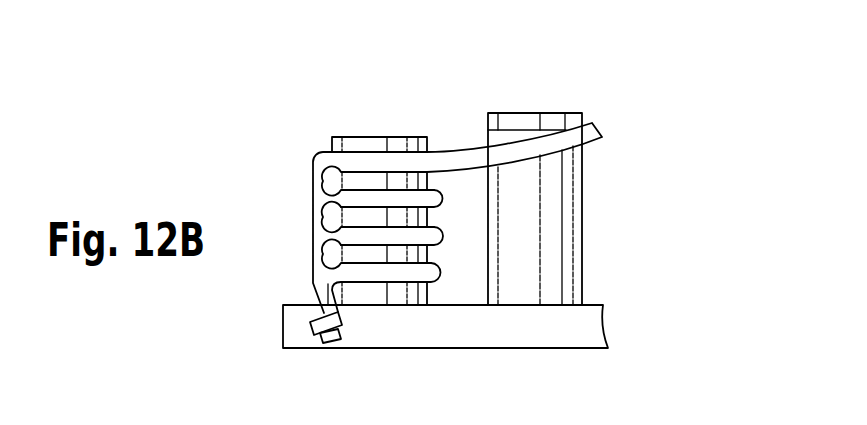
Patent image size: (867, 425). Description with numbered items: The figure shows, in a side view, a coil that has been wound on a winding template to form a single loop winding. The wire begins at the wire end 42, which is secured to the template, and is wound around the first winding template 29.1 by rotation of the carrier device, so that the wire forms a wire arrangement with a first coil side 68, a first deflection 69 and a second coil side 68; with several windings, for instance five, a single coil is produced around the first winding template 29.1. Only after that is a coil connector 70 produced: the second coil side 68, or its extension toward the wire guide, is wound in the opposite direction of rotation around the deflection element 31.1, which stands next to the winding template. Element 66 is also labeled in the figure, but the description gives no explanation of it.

The first winding template 29.1 is at (376, 127).
The deflection element 31.1 is at (533, 106).
The first coil connector 70 is at (530, 166).
The coil side 68 is at (320, 292).
The first deflection 69 is at (395, 235).
The wire end 42 is at (318, 340).
The contact element 66 is at (343, 330).